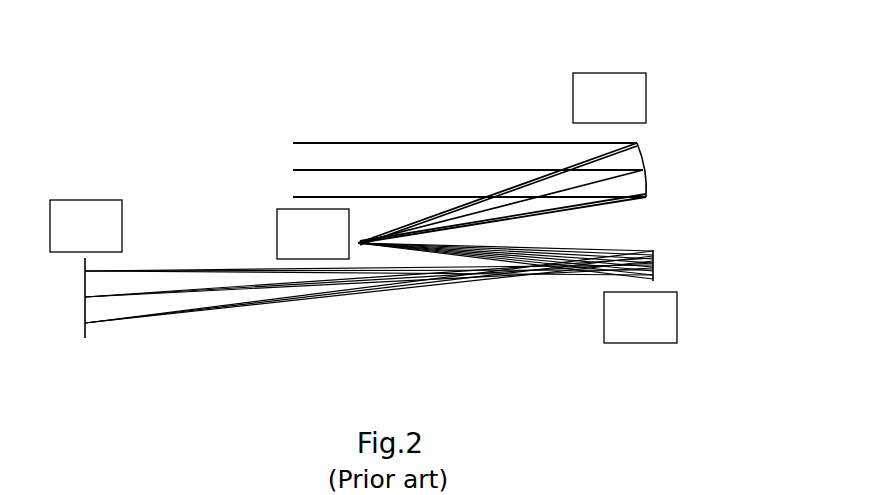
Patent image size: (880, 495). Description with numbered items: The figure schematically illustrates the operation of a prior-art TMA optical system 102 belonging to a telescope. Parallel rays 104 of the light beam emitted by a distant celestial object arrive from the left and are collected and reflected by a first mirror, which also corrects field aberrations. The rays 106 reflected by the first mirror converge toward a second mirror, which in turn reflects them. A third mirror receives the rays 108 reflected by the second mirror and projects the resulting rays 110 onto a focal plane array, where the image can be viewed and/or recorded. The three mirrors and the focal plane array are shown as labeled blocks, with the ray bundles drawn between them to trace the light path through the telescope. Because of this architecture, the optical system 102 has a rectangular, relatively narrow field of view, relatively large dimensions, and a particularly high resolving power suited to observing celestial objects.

The TMA optical system 102 is at (150, 131).
The rays 104 is at (305, 120).
The rays reflected by the first mirror 106 is at (632, 219).
The rays reflected by the second mirror 108 is at (502, 236).
The resulting rays 110 is at (473, 310).